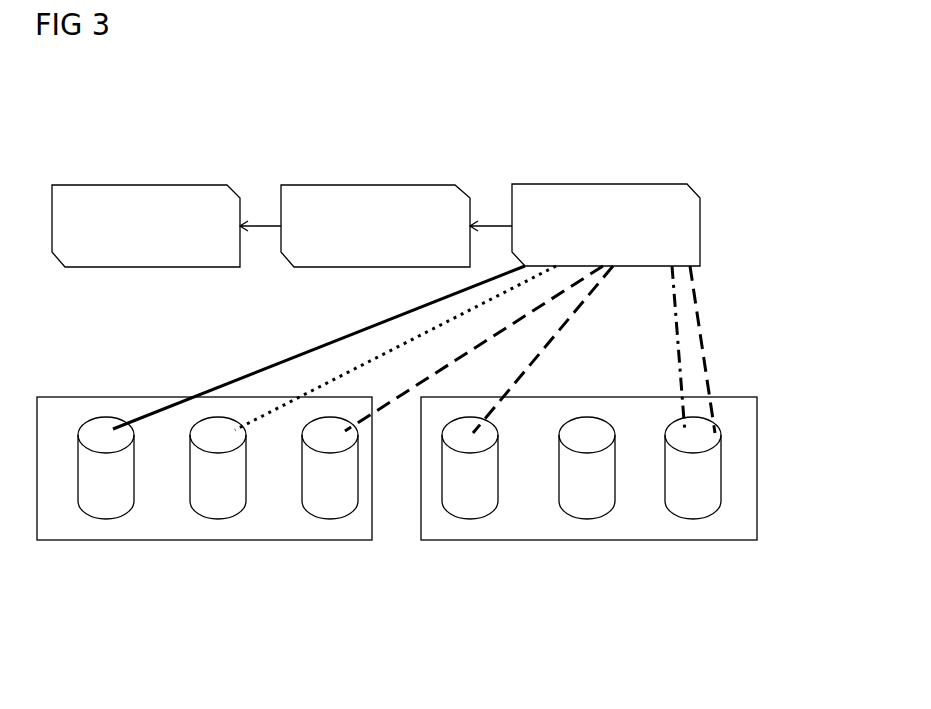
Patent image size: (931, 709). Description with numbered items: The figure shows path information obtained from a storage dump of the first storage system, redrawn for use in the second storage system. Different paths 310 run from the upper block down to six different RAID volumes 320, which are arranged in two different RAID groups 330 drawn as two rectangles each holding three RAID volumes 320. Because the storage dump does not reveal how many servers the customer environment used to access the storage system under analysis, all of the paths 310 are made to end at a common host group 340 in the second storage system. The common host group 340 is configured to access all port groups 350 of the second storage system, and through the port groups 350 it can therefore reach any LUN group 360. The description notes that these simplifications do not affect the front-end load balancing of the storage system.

The paths 310 is at (230, 378).
The RAID volumes 320 is at (103, 503).
The RAID groups 330 is at (287, 542).
The common host group 340 is at (146, 226).
The port groups 350 is at (355, 226).
The LUN group 360 is at (585, 225).